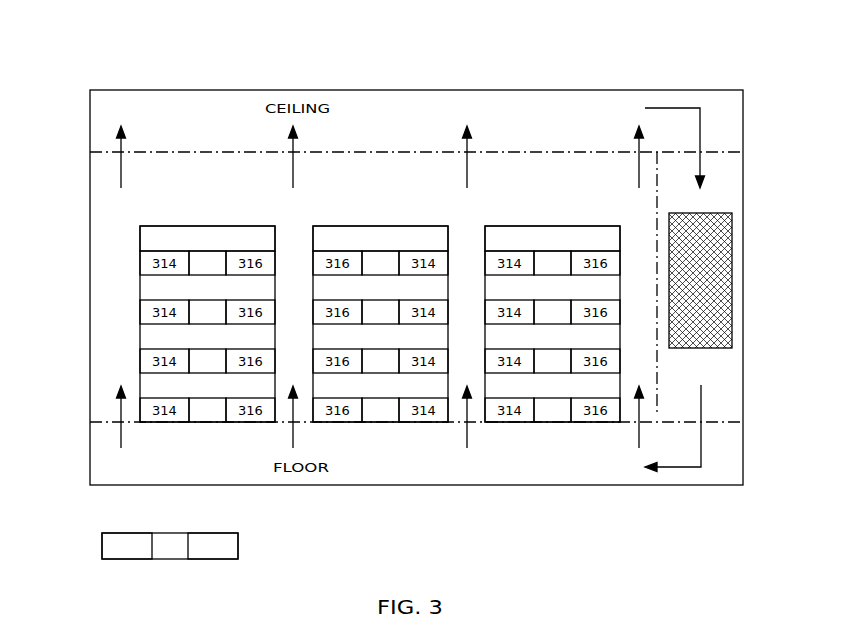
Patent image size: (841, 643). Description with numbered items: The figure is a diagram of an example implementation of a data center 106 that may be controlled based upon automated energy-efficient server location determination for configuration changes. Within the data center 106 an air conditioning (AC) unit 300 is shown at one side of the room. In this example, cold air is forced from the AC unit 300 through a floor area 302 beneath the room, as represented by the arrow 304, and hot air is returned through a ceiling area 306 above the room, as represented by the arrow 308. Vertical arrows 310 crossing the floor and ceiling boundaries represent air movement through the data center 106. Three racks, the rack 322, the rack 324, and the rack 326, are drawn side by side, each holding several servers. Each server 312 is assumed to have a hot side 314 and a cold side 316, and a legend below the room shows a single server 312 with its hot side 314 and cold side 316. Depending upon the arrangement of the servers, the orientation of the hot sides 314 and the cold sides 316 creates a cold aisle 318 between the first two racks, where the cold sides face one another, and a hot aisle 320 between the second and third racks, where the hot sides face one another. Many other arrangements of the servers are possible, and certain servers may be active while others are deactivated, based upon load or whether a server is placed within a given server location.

The data center 106 is at (55, 34).
The air conditioning (AC) unit 300 is at (732, 254).
The floor area 302 is at (757, 422).
The arrow 304 is at (701, 442).
The ceiling area 306 is at (757, 90).
The arrow 308 is at (702, 130).
The vertical arrows 310 is at (119, 165).
The server 312 is at (176, 556).
The hot side 314 is at (127, 546).
The cold side 316 is at (213, 546).
The cold aisle 318 is at (294, 242).
The hot aisle 320 is at (468, 242).
The rack 322 is at (207, 324).
The rack 324 is at (380, 324).
The rack 326 is at (552, 324).